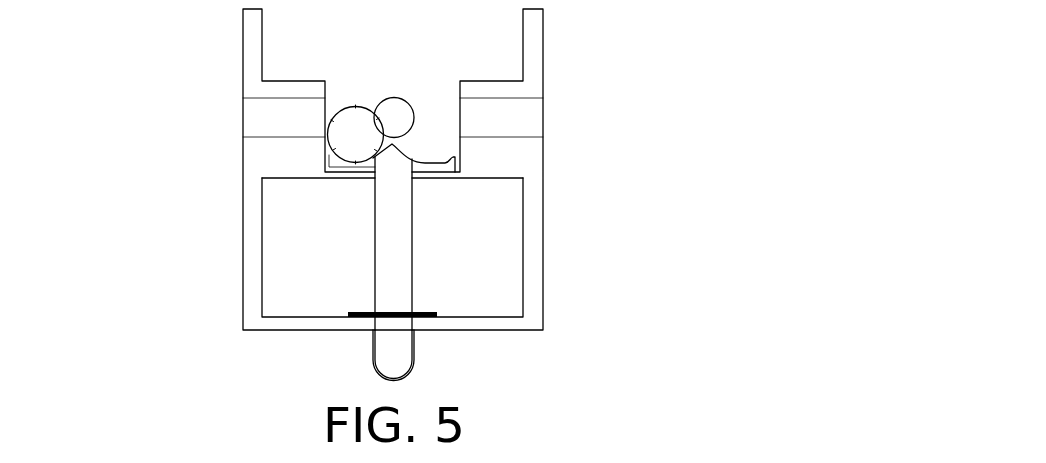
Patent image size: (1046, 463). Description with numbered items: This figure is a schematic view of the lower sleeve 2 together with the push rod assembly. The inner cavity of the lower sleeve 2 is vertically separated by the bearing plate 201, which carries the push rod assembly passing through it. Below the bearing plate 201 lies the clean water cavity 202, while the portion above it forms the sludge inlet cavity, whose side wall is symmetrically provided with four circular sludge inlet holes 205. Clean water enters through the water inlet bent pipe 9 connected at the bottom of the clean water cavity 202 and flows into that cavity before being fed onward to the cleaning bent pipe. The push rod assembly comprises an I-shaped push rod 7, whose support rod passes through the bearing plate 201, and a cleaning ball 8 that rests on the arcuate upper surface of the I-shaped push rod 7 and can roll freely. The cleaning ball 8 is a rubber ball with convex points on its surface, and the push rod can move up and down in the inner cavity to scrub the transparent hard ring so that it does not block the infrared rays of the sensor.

The lower sleeve 2 is at (543, 260).
The I-shaped push rod 7 is at (411, 267).
The cleaning ball 8 is at (355, 137).
The water inlet bent pipe 9 is at (415, 345).
The bearing plate 201 is at (418, 175).
The clean water cavity 202 is at (447, 208).
The circular sludge inlet holes 205 is at (312, 127).